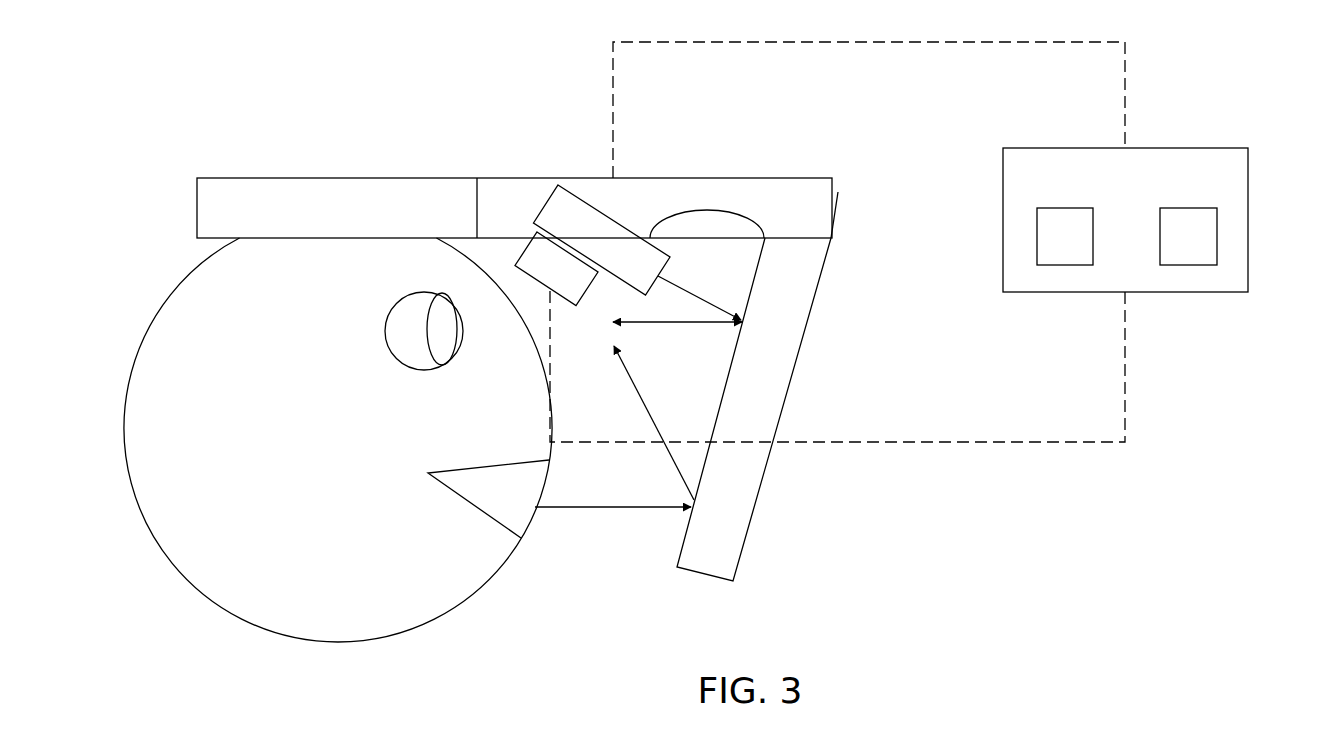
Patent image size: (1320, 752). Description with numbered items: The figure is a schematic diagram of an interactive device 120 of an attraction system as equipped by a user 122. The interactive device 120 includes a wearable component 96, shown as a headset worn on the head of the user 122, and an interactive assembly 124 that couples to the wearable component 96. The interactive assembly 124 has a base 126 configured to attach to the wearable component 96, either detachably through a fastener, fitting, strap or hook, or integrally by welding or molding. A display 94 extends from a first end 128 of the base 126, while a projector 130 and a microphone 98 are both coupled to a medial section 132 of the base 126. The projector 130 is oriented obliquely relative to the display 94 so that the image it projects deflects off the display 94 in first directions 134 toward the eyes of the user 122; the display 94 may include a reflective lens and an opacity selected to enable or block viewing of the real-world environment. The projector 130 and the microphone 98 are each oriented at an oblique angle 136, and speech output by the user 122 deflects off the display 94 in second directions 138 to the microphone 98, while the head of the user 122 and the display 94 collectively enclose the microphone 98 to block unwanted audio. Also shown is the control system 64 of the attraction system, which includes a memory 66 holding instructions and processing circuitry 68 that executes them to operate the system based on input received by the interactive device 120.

The interactive device 120 is at (458, 100).
The wearable component 96 is at (335, 178).
The base 126 is at (673, 178).
The user 122 is at (155, 530).
The projector 130 is at (541, 205).
The microphone 98 is at (523, 258).
The medial section 132 is at (588, 155).
The oblique angle 136 is at (712, 212).
The first end 128 is at (847, 153).
The display 94 is at (749, 525).
The interactive assembly 124 is at (842, 324).
The first directions 134 is at (675, 323).
The second directions 138 is at (605, 508).
The control system 64 is at (1190, 148).
The memory 66 is at (1037, 232).
The processing circuitry 68 is at (1217, 232).